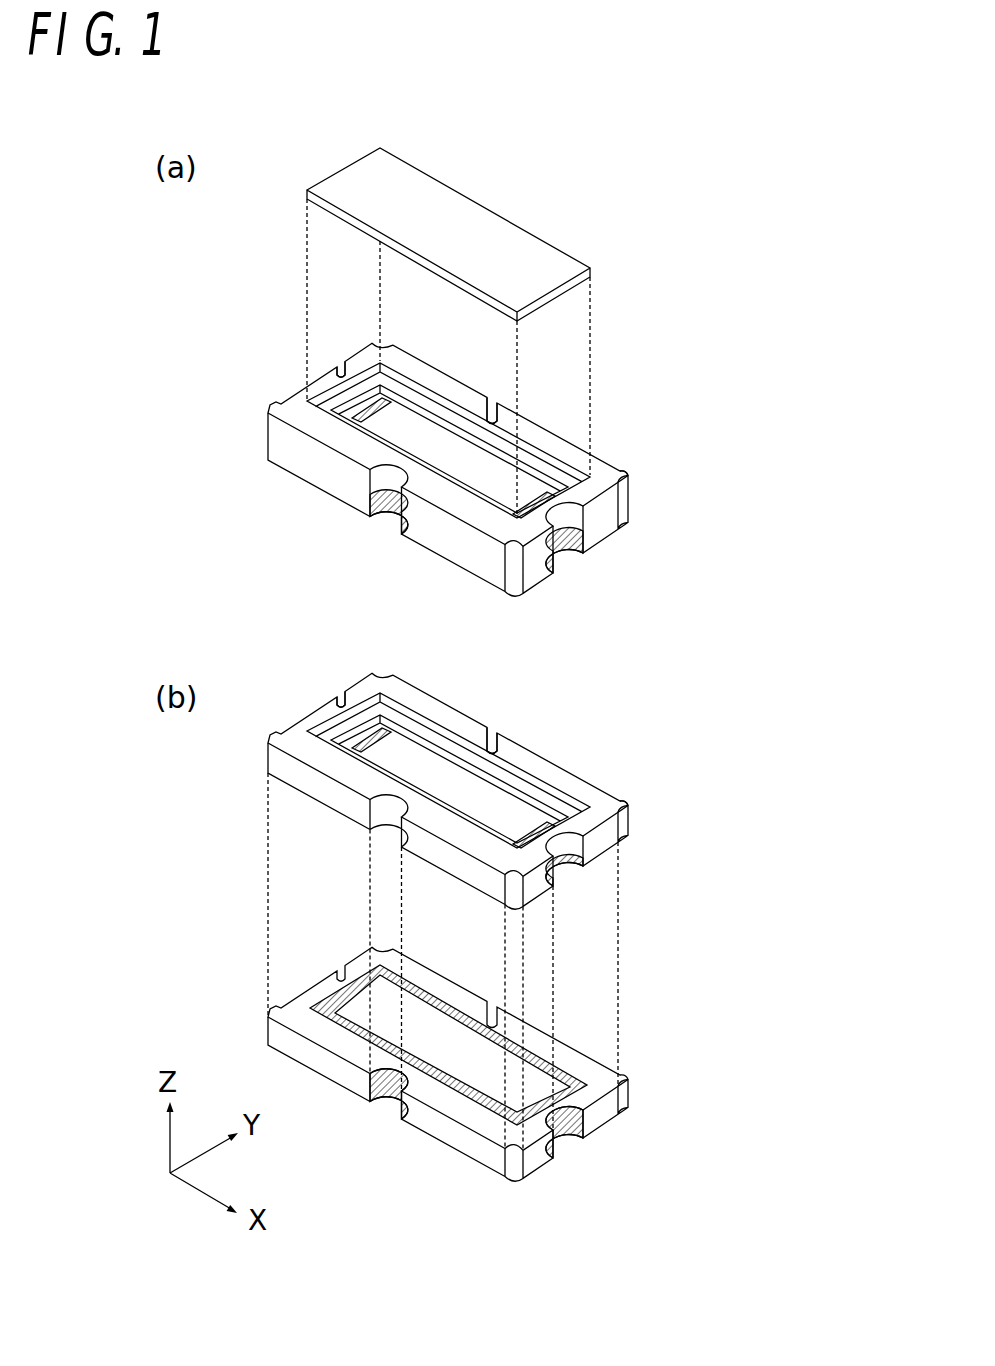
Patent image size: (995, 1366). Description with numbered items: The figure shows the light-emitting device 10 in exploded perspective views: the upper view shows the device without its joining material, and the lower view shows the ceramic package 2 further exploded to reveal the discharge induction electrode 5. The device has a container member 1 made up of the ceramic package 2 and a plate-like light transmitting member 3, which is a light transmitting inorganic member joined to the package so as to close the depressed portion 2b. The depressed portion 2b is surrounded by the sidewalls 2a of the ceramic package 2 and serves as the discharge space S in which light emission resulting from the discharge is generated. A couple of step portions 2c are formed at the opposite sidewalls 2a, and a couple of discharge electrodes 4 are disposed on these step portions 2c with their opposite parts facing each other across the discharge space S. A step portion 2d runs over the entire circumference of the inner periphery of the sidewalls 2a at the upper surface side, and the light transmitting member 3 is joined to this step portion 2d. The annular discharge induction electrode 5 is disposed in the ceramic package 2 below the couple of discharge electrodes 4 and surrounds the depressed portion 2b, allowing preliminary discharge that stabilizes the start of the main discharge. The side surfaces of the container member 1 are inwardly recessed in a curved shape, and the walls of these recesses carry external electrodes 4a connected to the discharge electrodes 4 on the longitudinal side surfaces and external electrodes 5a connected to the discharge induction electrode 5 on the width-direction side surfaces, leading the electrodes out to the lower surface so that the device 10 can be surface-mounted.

The light-emitting device 10 is at (632, 234).
The container member 1 is at (683, 300).
The ceramic package 2 is at (600, 460).
The light transmitting member 3 is at (520, 288).
The discharge electrodes 4 is at (372, 396).
The discharge induction electrode 5 is at (605, 1075).
The sidewalls 2a is at (296, 383).
The depressed portion 2b is at (395, 437).
The step portions 2c is at (337, 364).
The step portion 2d is at (573, 508).
The external electrodes 4a is at (583, 548).
The external electrodes 5a is at (388, 518).
The discharge space S is at (442, 456).